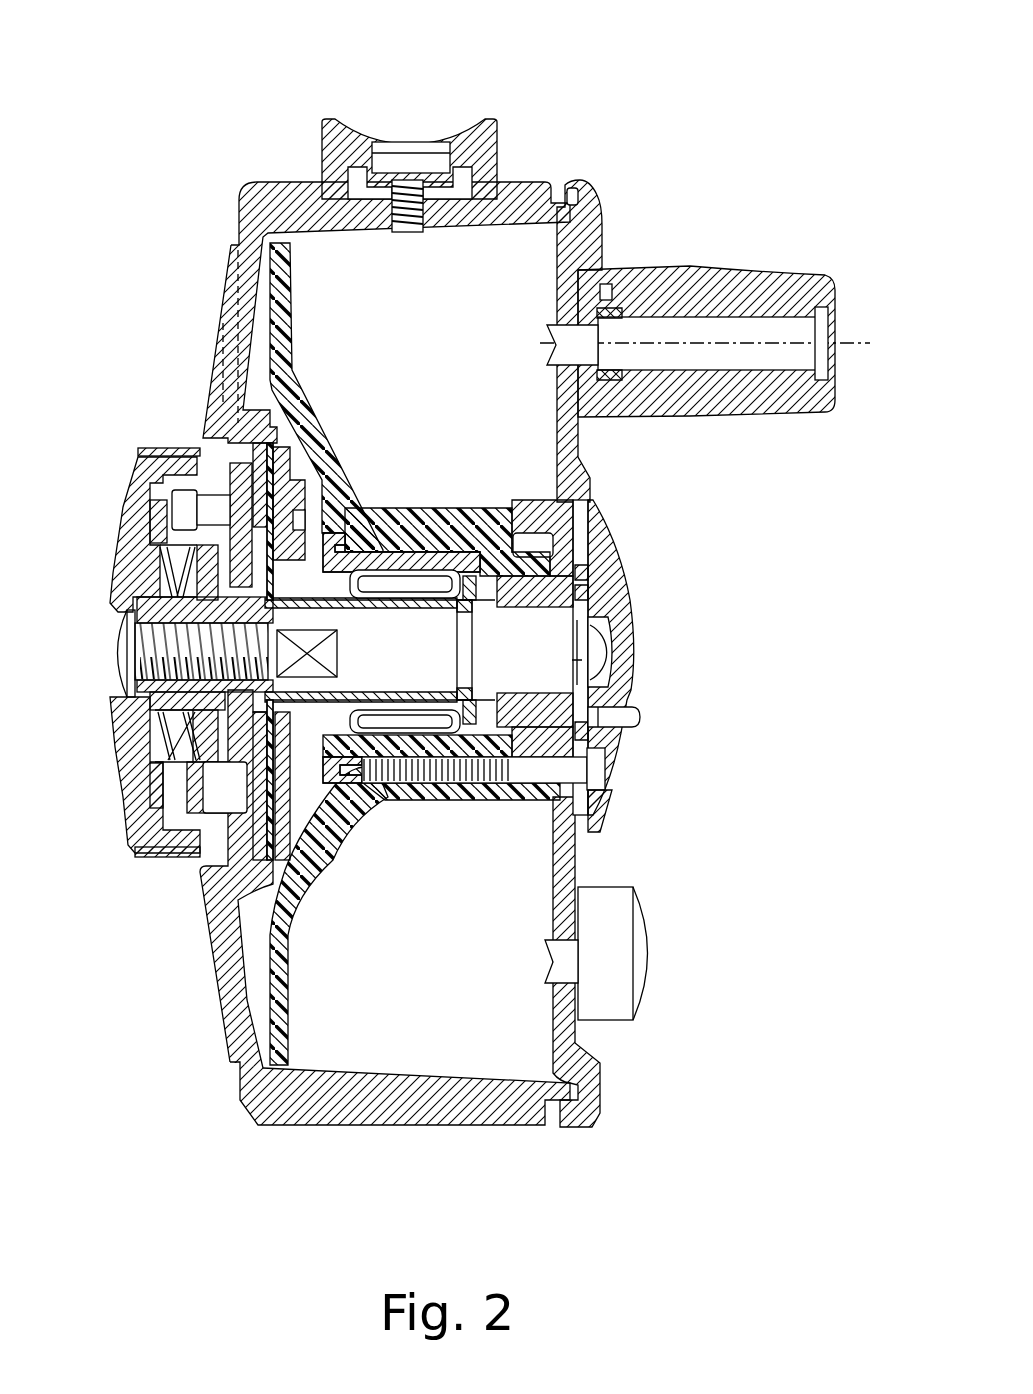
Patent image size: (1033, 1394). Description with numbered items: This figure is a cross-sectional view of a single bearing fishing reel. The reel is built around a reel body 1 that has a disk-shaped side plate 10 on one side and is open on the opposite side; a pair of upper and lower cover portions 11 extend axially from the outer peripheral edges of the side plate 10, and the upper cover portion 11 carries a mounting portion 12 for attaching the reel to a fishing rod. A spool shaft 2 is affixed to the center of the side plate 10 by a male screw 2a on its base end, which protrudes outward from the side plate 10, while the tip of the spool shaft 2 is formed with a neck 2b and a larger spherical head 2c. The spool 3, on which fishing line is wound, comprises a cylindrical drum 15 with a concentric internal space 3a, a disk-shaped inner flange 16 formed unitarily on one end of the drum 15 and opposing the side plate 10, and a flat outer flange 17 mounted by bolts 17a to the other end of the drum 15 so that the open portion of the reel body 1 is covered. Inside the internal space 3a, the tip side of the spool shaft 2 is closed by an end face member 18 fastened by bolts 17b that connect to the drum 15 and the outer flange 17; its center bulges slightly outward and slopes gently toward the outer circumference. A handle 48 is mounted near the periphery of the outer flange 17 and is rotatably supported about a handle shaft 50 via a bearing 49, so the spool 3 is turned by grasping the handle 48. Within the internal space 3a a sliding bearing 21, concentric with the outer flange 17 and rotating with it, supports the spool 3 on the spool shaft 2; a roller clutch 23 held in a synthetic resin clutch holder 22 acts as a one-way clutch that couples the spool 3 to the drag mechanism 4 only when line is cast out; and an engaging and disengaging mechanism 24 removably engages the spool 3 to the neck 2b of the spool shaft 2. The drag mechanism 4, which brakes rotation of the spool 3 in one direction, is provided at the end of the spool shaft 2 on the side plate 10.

The reel body 1 is at (215, 282).
The spool shaft 2 is at (542, 637).
The male screw 2a is at (142, 655).
The neck 2b is at (597, 747).
The spherical head 2c is at (600, 647).
The spool 3 is at (600, 200).
The internal space 3a is at (440, 512).
The drag mechanism 4 is at (248, 457).
The side plate 10 is at (222, 335).
The cover portions 11 is at (528, 180).
The mounting portion 12 is at (470, 120).
The drum 15 is at (453, 508).
The inner flange 16 is at (298, 388).
The outer flange 17 is at (558, 413).
The bolts 17a is at (573, 818).
The bolts 17b is at (525, 773).
The end face member 18 is at (608, 545).
The sliding bearing 21 is at (523, 597).
The clutch holder 22 is at (367, 512).
The roller clutch 23 is at (407, 600).
The engaging and disengaging mechanism 24 is at (637, 710).
The handle 48 is at (740, 285).
The bearing 49 is at (622, 362).
The handle shaft 50 is at (828, 337).